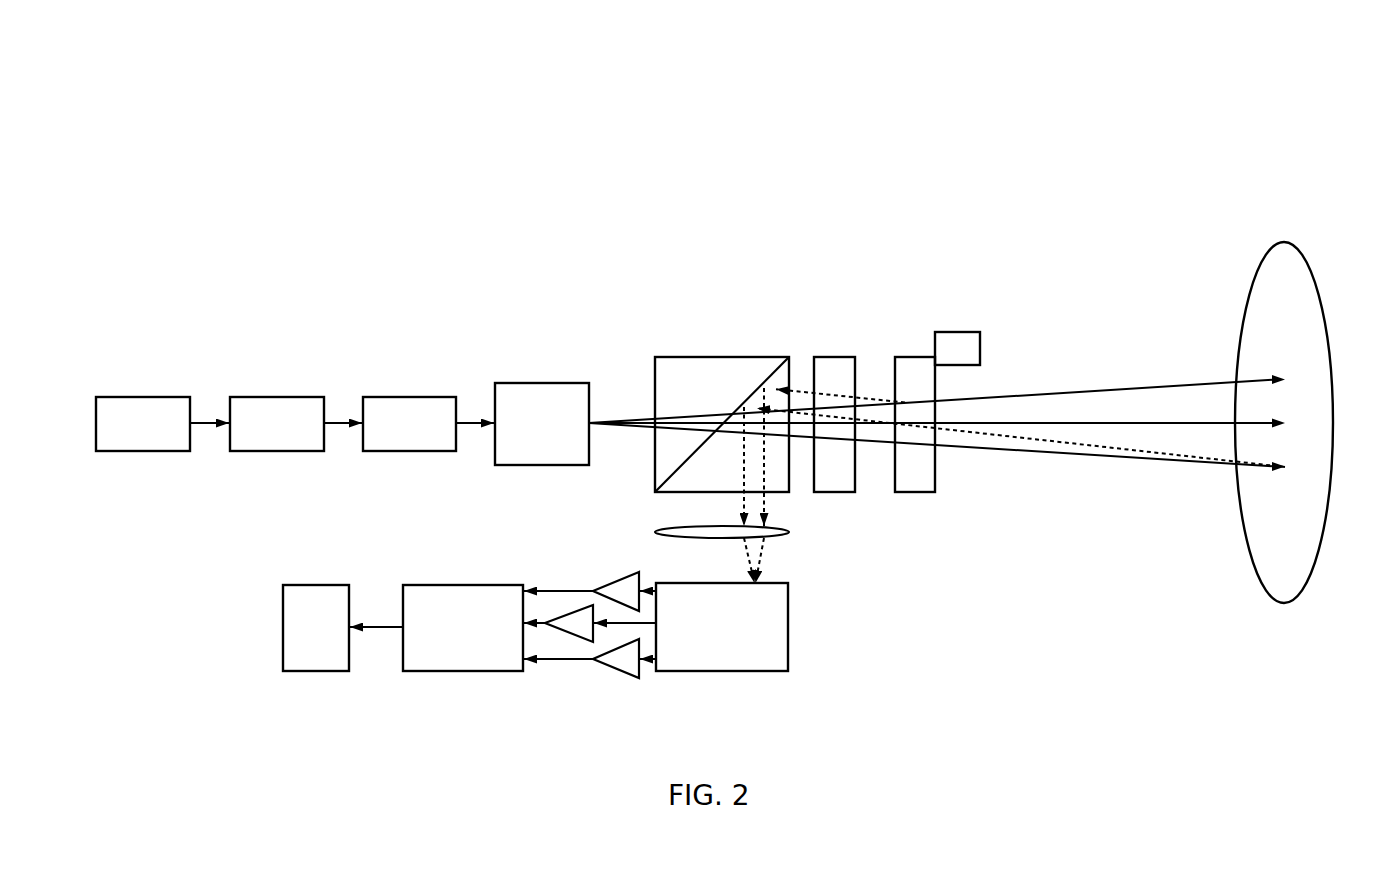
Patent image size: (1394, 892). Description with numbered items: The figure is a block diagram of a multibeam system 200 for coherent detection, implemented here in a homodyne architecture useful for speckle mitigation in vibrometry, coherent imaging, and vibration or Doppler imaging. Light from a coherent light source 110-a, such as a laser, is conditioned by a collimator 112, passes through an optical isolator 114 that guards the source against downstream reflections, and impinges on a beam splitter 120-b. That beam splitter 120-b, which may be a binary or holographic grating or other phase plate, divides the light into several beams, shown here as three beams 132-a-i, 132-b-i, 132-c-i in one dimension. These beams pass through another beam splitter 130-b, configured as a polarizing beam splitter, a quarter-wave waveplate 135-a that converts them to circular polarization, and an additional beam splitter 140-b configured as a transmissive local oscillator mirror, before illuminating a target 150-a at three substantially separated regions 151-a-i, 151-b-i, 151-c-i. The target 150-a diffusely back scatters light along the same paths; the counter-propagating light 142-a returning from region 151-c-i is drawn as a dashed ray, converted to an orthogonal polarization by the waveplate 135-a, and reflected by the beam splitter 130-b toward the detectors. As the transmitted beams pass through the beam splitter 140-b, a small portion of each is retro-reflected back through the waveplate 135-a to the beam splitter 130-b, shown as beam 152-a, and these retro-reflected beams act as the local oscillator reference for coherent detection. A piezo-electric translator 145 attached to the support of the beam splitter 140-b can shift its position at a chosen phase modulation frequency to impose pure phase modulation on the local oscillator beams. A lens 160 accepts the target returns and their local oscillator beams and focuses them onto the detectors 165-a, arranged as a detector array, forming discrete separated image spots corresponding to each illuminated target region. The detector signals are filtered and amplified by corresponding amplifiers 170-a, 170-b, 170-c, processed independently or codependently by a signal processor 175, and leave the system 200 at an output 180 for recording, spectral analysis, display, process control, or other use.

The multibeam system 200 is at (1271, 76).
The coherent light source 110-a is at (153, 397).
The collimator 112 is at (285, 397).
The optical isolator 114 is at (421, 397).
The beam splitter 120-b is at (551, 383).
The beam splitter 130-b is at (731, 357).
The quarter-wave waveplate 135-a is at (835, 357).
The beam splitter 140-b is at (908, 357).
The piezo-electric translator 145 is at (960, 332).
The retro-reflected beam 152-a is at (803, 388).
The counter-propagating light 142-a is at (1187, 458).
The beam 132-a-i is at (1182, 382).
The beam 132-b-i is at (1202, 422).
The beam 132-c-i is at (1055, 453).
The target 150-a is at (1252, 281).
The region 151-a-i is at (1293, 370).
The region 151-b-i is at (1293, 410).
The region 151-c-i is at (1293, 454).
The lens 160 is at (659, 532).
The detectors 165-a is at (708, 583).
The amplifier 170-a is at (617, 581).
The amplifier 170-b is at (555, 630).
The amplifier 170-c is at (616, 675).
The signal processor 175 is at (475, 585).
The output 180 is at (322, 585).